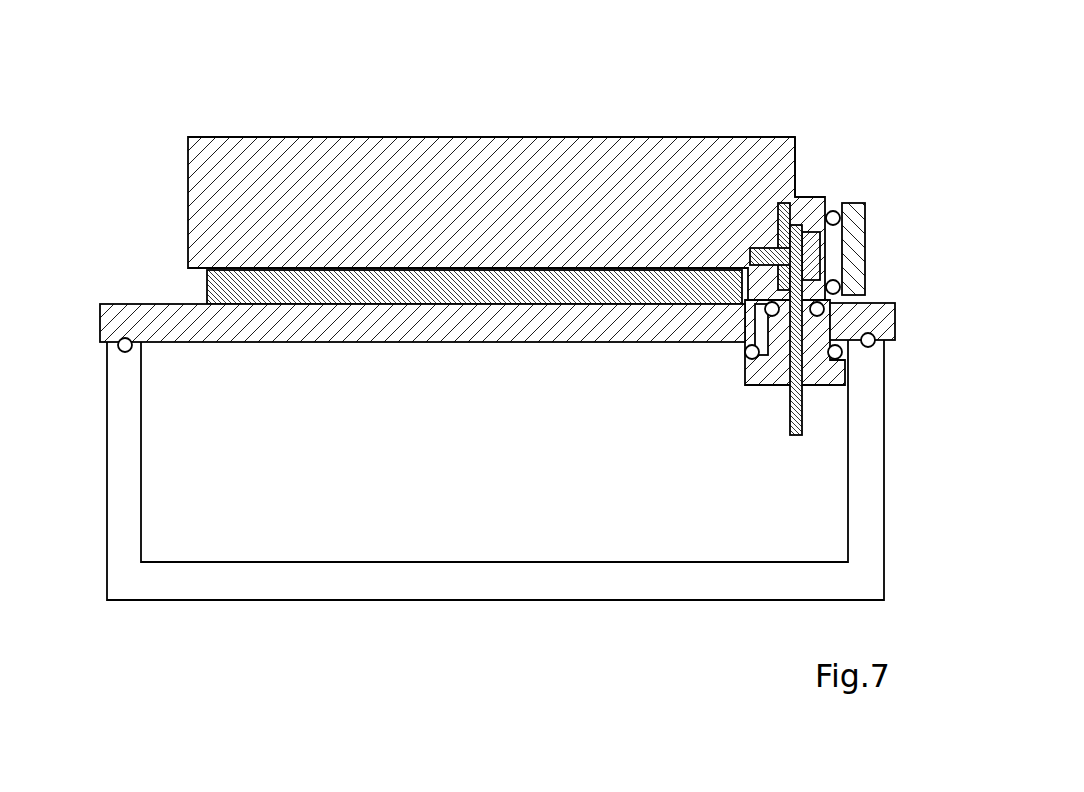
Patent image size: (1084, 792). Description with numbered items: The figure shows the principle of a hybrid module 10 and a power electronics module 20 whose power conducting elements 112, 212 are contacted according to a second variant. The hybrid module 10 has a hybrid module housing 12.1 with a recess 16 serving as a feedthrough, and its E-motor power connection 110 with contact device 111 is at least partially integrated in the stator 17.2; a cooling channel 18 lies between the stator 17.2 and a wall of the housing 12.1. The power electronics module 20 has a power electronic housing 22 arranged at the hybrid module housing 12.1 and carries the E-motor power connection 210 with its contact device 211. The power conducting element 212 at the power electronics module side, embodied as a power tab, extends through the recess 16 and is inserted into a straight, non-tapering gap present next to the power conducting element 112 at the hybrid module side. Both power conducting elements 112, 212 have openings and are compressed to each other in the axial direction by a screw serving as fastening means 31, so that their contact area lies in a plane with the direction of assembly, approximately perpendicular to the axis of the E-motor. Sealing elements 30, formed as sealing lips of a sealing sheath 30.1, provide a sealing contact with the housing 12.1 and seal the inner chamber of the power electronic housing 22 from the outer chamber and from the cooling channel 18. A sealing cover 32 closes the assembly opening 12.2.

The hybrid module 10 is at (121, 194).
The hybrid module housing 12.1 is at (140, 305).
The assembly opening 12.2 is at (827, 265).
The recess 16 is at (753, 267).
The stator 17.2 is at (795, 140).
The cooling channel 18 is at (207, 278).
The power electronics module 20 is at (106, 622).
The power electronic housing 22 is at (330, 598).
The sealing elements 30 is at (118, 346).
The sealing sheath 30.1 is at (823, 388).
The fastening means 31 is at (770, 247).
The sealing cover 32 is at (867, 233).
The E-motor power connection 110 is at (875, 248).
The contact device 111 is at (831, 178).
The power conducting element 112 is at (797, 198).
The E-motor power connection 210 is at (761, 369).
The contact device 211 is at (724, 411).
The power conducting element 212 is at (802, 418).